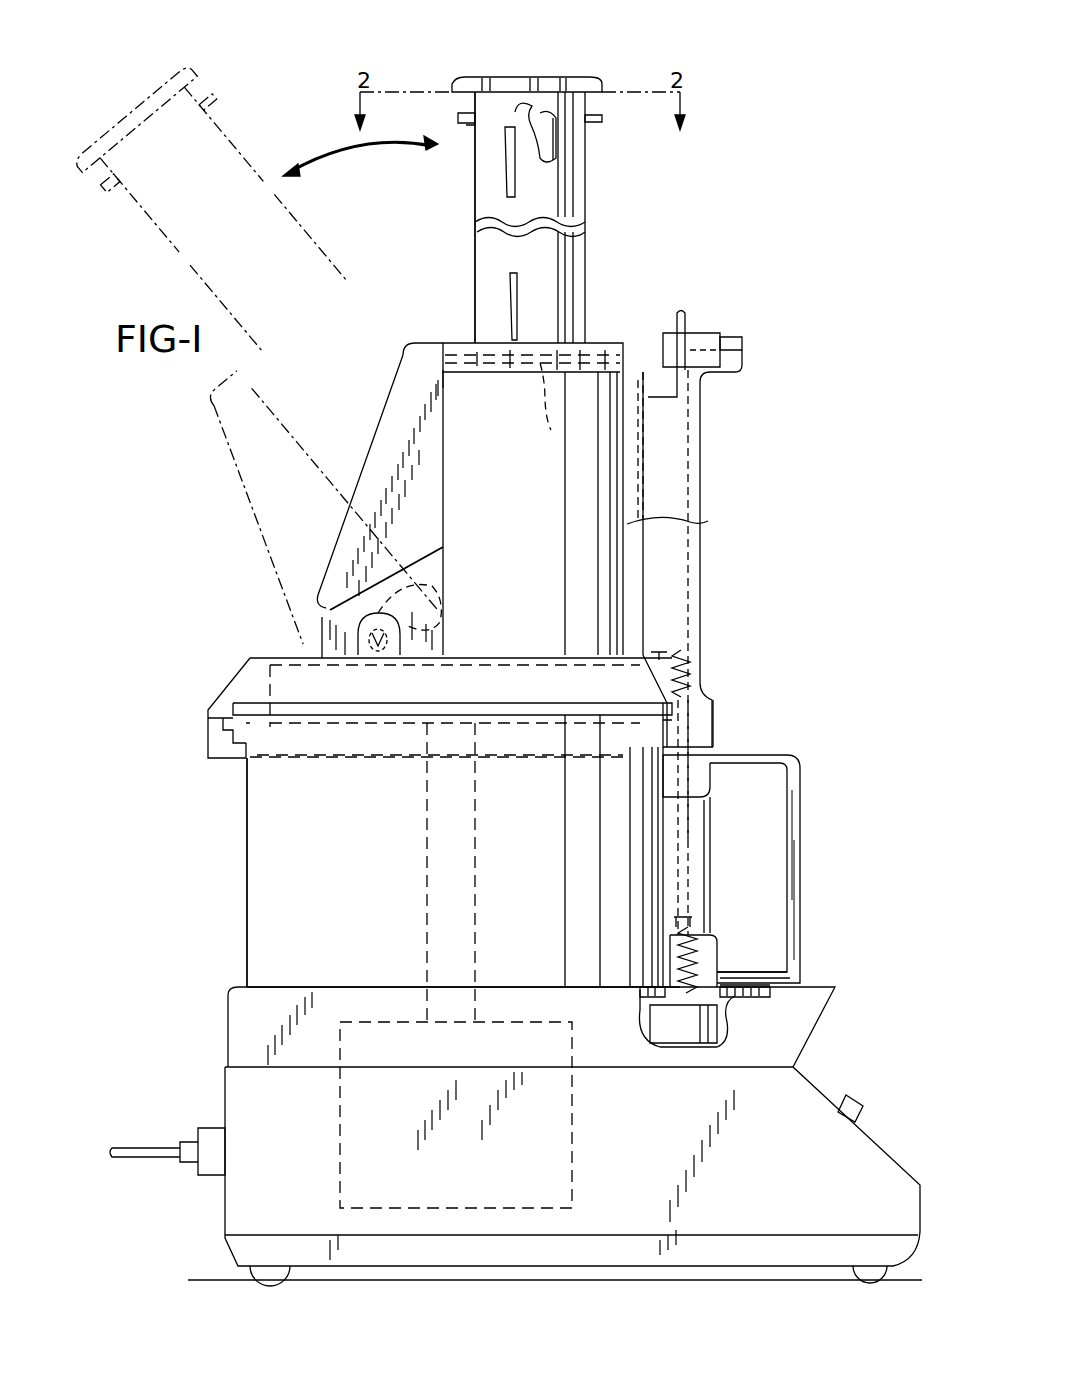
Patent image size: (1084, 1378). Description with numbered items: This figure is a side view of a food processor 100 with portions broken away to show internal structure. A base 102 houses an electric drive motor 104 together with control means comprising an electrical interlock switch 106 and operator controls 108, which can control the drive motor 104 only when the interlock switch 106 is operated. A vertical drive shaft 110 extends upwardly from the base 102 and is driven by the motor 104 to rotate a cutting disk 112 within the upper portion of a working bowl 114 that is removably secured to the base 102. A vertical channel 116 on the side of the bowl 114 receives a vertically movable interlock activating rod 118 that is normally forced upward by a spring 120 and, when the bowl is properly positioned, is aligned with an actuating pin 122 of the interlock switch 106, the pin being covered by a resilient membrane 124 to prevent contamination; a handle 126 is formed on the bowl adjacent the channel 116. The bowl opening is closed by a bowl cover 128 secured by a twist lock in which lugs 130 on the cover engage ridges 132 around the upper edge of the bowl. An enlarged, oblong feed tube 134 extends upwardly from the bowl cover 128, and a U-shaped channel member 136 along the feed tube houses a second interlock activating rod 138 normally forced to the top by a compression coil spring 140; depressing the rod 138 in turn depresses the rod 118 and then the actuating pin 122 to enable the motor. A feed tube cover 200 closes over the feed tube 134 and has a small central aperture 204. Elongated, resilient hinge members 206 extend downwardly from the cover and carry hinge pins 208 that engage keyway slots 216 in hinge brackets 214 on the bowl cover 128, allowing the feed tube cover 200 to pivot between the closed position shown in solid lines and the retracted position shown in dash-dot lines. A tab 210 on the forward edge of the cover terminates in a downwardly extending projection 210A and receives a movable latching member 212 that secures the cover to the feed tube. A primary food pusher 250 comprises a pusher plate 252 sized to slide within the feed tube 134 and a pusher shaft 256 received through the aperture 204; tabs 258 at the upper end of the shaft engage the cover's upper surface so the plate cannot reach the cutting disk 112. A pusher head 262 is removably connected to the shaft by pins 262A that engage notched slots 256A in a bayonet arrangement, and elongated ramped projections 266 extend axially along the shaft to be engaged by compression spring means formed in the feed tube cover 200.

The food processor 100 is at (241, 853).
The base 102 is at (222, 1088).
The electric drive motor 104 is at (575, 1160).
The electrical interlock switch 106 is at (675, 1043).
The operator controls 108 is at (840, 1090).
The vertical drive shaft 110 is at (427, 855).
The cutting disk 112 is at (348, 727).
The working bowl 114 is at (247, 915).
The vertical channel 116 is at (710, 828).
The interlock activating rod 118 is at (690, 878).
The spring 120 is at (698, 950).
The actuating pin 122 is at (715, 1008).
The resilient membrane 124 is at (724, 968).
The handle 126 is at (808, 838).
The bowl cover 128 is at (266, 658).
The lugs 130 is at (206, 740).
The ridges 132 is at (248, 724).
The feed tube 134 is at (690, 524).
The channel member 136 is at (702, 480).
The interlock activating rod 138 is at (688, 436).
The compression coil spring 140 is at (697, 667).
The feed tube cover 200 is at (622, 342).
The central aperture 204 is at (488, 374).
The elongated hinge members 206 is at (390, 410).
The hinge pins 208 is at (437, 586).
The tab 210 is at (672, 333).
The downwardly extending projection 210A is at (742, 344).
The latching member 212 is at (715, 333).
The hinge brackets 214 is at (440, 562).
The keyway slots 216 is at (392, 640).
The primary food pusher 250 is at (590, 250).
The pusher plate 252 is at (524, 411).
The pusher shaft 256 is at (478, 215).
The notched slots 256A is at (553, 158).
The tabs 258 is at (458, 115).
The pusher head 262 is at (585, 80).
The pins 262A is at (560, 188).
The elongated ramped projections 266 is at (503, 150).